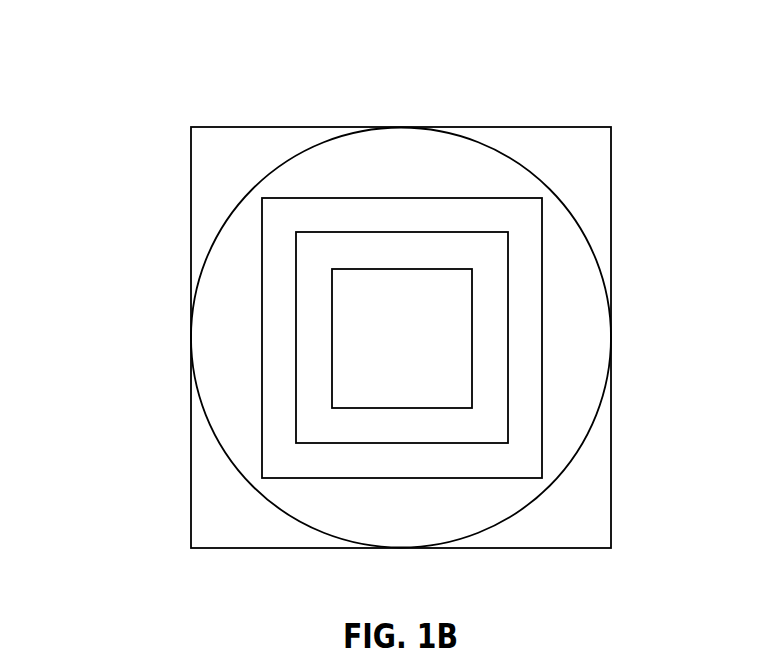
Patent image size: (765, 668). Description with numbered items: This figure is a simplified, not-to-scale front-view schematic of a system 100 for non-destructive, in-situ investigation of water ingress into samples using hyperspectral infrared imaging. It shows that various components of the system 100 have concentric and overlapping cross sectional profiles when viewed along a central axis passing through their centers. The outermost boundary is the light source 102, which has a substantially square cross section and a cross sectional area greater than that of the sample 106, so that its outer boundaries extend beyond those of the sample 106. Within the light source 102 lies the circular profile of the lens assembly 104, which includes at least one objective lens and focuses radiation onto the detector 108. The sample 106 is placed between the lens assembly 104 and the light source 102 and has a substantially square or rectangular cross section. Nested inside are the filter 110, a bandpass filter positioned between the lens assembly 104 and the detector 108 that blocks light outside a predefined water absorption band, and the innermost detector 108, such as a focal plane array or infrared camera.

The system 100 is at (216, 86).
The light source 102 is at (585, 127).
The lens assembly 104 is at (422, 171).
The sample 106 is at (422, 226).
The detector 108 is at (422, 348).
The filter 110 is at (422, 260).